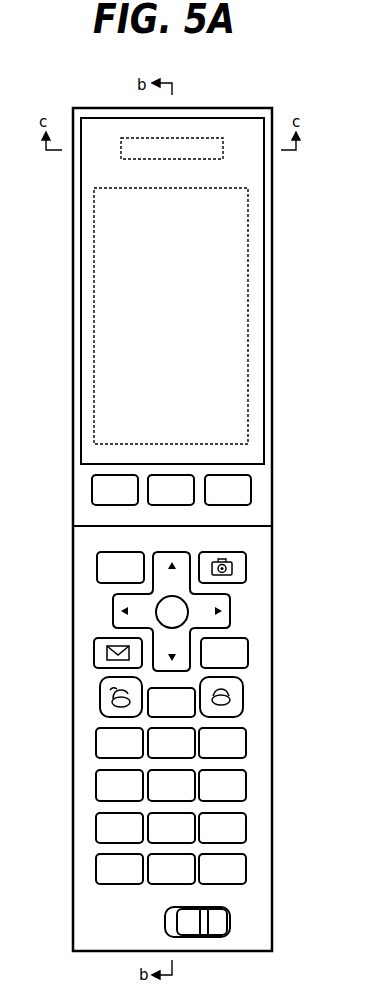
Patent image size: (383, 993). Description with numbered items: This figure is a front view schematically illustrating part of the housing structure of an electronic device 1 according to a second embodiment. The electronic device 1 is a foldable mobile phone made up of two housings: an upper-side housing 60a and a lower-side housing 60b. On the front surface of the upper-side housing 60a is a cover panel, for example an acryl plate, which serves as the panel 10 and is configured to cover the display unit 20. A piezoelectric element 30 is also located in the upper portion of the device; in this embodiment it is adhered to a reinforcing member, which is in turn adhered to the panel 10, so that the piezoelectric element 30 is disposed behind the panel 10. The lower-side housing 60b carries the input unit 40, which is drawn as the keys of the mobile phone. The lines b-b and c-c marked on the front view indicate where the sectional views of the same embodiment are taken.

The electronic device 1 is at (135, 104).
The panel 10 is at (190, 117).
The display unit 20 is at (210, 276).
The piezoelectric element 30 is at (213, 138).
The input unit 40 is at (235, 491).
The upper-side housing 60a is at (73, 243).
The lower-side housing 60b is at (73, 653).